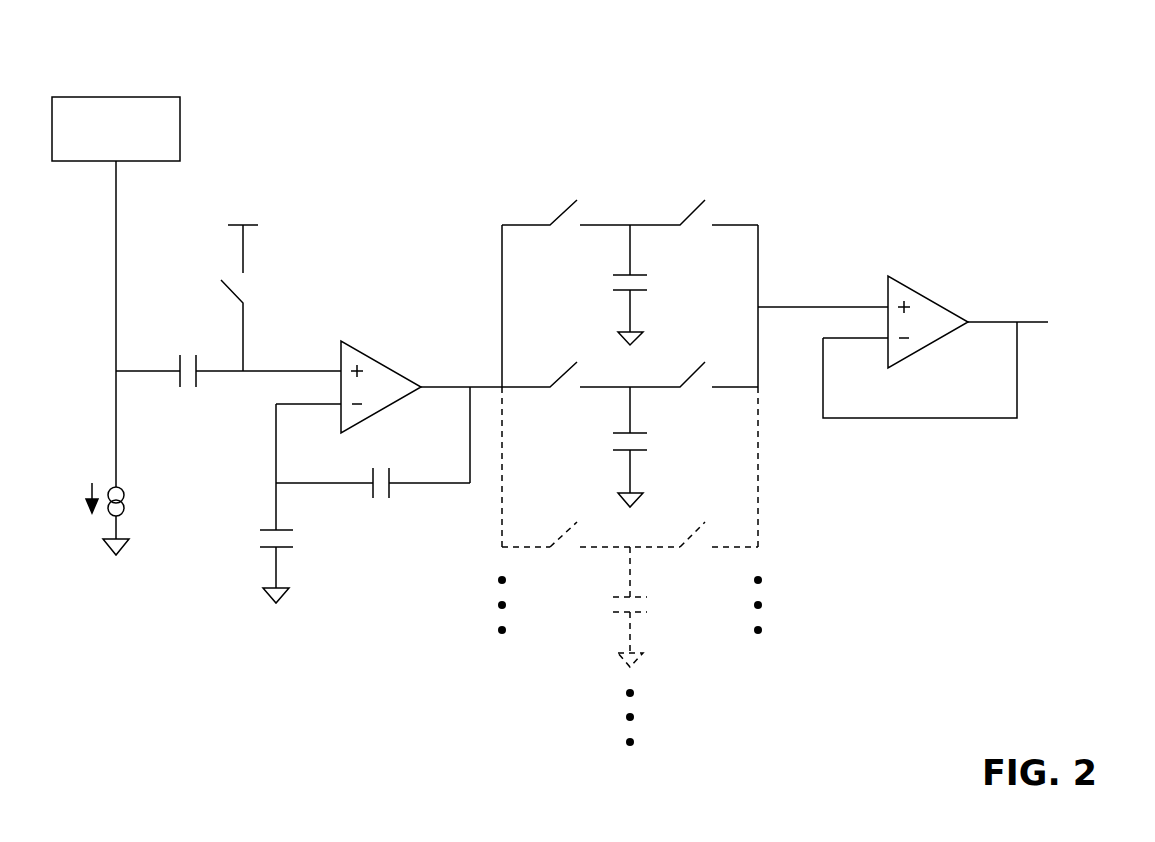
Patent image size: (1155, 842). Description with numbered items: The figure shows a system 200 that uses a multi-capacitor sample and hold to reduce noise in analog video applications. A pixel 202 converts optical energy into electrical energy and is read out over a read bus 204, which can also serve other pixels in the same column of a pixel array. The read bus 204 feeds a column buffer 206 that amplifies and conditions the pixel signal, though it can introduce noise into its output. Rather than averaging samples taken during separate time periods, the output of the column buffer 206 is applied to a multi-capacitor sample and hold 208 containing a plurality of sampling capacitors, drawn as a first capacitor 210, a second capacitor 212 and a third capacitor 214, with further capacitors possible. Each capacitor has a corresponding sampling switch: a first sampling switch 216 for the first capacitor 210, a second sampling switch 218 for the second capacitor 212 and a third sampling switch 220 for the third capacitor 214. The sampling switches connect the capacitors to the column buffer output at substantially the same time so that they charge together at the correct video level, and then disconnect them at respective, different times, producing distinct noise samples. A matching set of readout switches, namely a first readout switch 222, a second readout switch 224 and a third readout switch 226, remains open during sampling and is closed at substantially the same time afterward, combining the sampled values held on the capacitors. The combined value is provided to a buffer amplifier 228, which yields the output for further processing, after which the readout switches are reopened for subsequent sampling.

The system 200 is at (1044, 58).
The pixel 202 is at (115, 95).
The read bus 204 is at (116, 215).
The column buffer 206 is at (367, 353).
The multi-capacitor sample and hold 208 is at (484, 200).
The capacitor C1 210 is at (608, 285).
The capacitor C2 212 is at (608, 446).
The capacitor C3 214 is at (608, 606).
The sampling switch 1 216 is at (567, 236).
The sampling switch 2 218 is at (567, 396).
The sampling switch 3 220 is at (571, 560).
The readout switch 1 222 is at (689, 236).
The readout switch 2 224 is at (689, 396).
The readout switch 3 226 is at (688, 560).
The buffer amplifier 228 is at (937, 303).